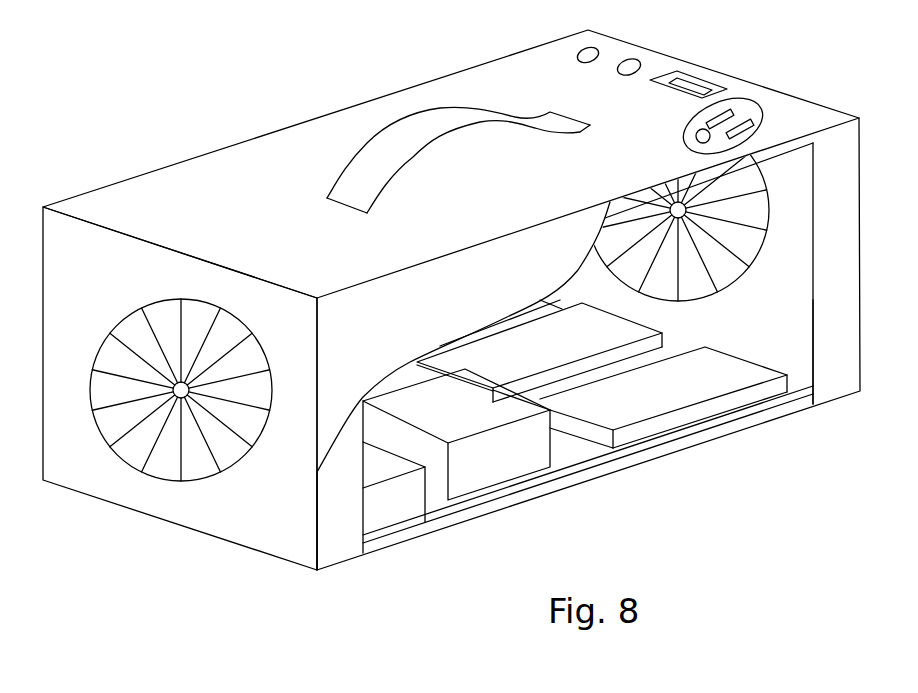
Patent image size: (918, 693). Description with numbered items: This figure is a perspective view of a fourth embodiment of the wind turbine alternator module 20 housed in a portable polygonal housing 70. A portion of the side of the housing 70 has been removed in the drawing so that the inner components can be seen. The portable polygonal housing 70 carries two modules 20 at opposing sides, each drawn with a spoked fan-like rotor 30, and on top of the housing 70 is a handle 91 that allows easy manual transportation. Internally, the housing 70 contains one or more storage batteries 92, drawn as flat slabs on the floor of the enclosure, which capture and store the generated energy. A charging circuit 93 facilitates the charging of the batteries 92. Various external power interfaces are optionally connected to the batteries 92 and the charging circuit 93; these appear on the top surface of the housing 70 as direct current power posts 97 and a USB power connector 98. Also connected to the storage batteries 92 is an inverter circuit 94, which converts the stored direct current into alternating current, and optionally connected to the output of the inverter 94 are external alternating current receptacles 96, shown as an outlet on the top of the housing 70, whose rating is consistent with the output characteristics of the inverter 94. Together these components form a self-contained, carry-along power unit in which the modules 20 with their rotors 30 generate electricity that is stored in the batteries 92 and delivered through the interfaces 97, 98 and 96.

The portable polygonal housing 70 is at (174, 152).
The handle 91 is at (408, 125).
The direct current power posts 97 is at (600, 55).
The USB power connector 98 is at (700, 80).
The external alternating current receptacles 96 is at (750, 110).
The fans 30 is at (200, 464).
The wind turbine alternator module 20 is at (336, 544).
The storage batteries 92 is at (543, 365).
The charging circuit 93 is at (372, 524).
The inverter circuit 94 is at (460, 488).